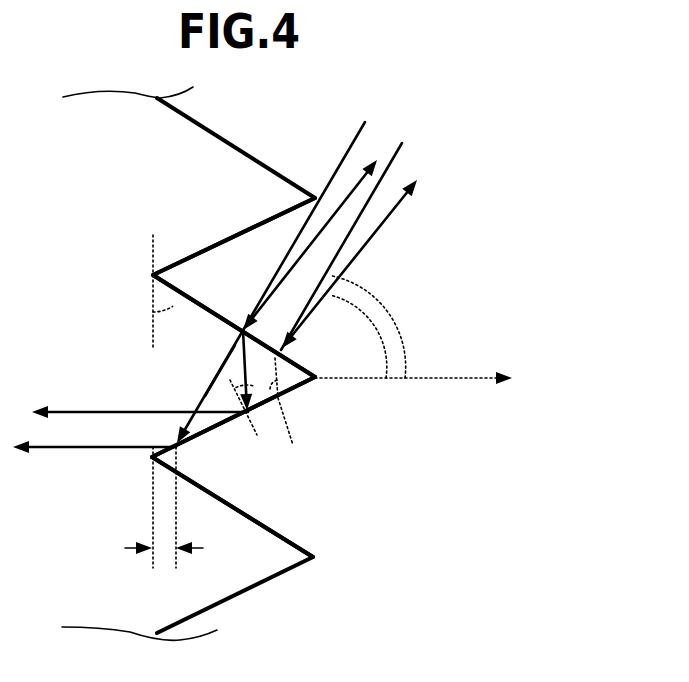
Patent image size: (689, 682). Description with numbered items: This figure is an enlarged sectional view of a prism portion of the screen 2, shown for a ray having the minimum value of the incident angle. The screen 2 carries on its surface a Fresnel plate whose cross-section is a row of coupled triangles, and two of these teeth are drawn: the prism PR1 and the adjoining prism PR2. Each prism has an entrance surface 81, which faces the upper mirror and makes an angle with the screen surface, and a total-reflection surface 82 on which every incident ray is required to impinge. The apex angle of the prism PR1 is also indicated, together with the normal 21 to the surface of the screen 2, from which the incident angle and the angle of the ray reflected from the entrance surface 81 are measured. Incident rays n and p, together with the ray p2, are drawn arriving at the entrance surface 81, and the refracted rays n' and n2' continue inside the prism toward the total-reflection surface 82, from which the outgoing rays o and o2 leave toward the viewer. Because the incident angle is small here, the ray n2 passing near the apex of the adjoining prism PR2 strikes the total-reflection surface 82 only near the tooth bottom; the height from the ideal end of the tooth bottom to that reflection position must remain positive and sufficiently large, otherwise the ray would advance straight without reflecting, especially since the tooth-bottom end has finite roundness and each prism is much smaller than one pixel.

The screen 2 is at (103, 225).
The adjoining prism PR2 is at (290, 200).
The prism PR1 is at (216, 400).
The entrance surface 81 is at (297, 367).
The total-reflection surface 82 is at (300, 387).
The normal to the surface of the screen 21 is at (453, 380).
The ray n2 is at (271, 269).
The incident light ray p2 is at (356, 182).
The incident light ray n is at (345, 241).
The incident light ray p is at (388, 222).
The refracted light ray n' is at (229, 363).
The refracted light ray n2' is at (166, 373).
The outgoing light ray o is at (90, 410).
The outgoing light ray o2 is at (58, 448).